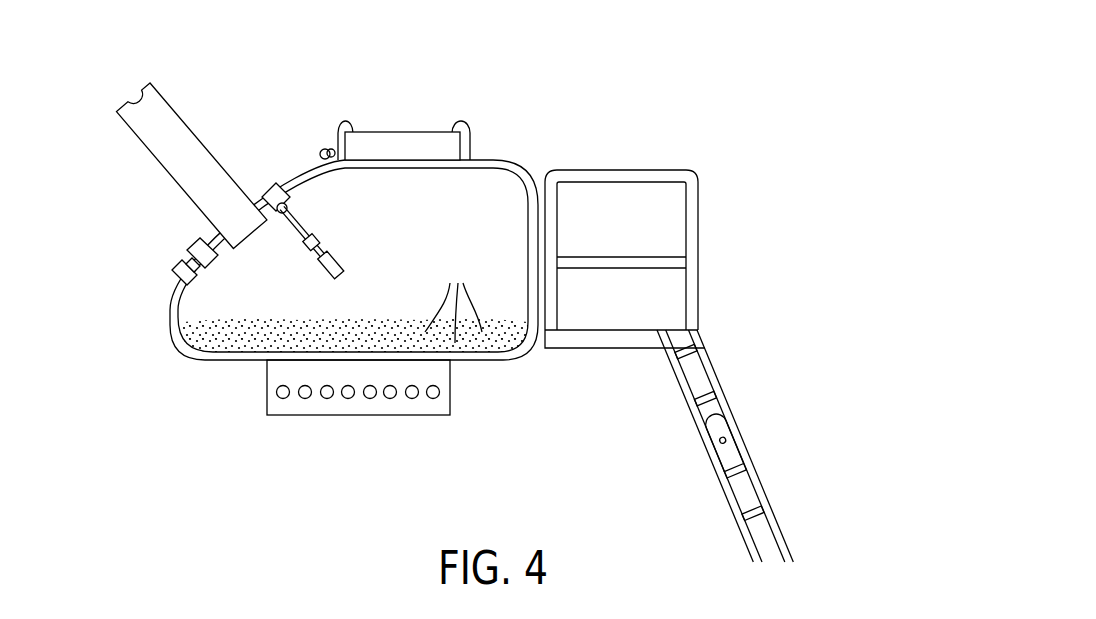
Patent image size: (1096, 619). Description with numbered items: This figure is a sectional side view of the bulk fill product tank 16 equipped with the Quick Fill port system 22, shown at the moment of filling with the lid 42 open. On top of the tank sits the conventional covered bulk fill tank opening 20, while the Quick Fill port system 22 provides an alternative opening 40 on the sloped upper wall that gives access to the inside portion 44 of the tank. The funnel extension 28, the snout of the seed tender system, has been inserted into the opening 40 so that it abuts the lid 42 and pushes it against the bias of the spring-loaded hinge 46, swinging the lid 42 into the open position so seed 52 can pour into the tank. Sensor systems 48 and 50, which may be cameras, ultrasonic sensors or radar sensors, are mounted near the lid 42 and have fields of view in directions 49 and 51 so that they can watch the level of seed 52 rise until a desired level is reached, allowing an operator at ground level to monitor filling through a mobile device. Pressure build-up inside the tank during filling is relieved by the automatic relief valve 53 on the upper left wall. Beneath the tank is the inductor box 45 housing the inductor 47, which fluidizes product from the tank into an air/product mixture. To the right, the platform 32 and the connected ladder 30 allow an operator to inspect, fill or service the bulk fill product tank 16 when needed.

The bulk fill product tank 16 is at (170, 315).
The bulk fill tank opening 20 is at (402, 122).
The Quick Fill port system 22 is at (182, 222).
The funnel extension 28 is at (224, 198).
The ladder 30 is at (778, 528).
The platform 32 is at (630, 328).
The opening 40 is at (247, 187).
The lid 42 is at (277, 222).
The inside portion 44 is at (443, 224).
The inductor box 45 is at (432, 415).
The spring-loaded hinge 46 is at (278, 192).
The inductor 47 is at (368, 396).
The sensor system 48 is at (310, 248).
The direction 49 is at (320, 232).
The sensor system 50 is at (332, 258).
The direction 51 is at (350, 270).
The seed 52 is at (453, 298).
The automatic relief valve 53 is at (175, 263).